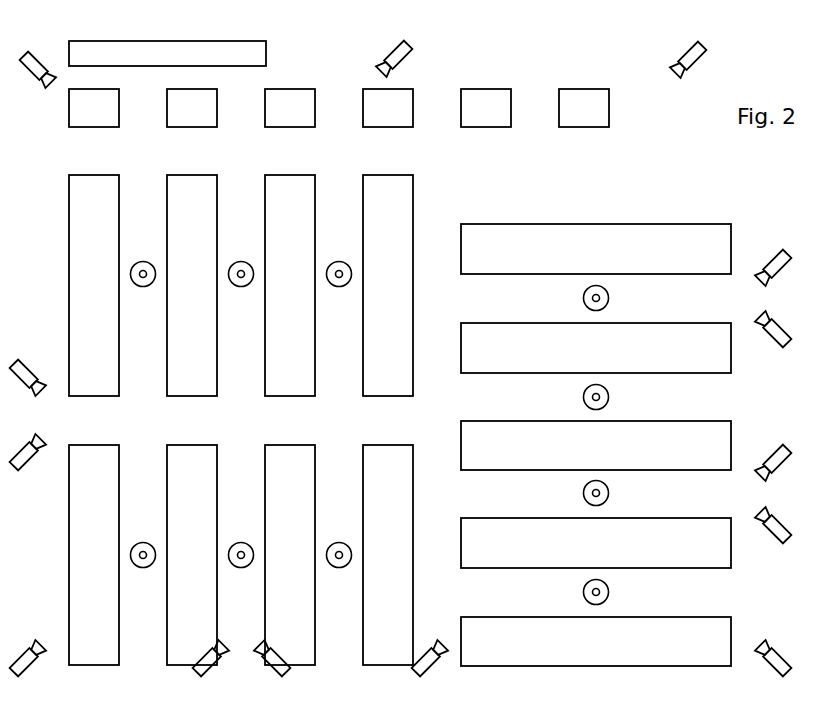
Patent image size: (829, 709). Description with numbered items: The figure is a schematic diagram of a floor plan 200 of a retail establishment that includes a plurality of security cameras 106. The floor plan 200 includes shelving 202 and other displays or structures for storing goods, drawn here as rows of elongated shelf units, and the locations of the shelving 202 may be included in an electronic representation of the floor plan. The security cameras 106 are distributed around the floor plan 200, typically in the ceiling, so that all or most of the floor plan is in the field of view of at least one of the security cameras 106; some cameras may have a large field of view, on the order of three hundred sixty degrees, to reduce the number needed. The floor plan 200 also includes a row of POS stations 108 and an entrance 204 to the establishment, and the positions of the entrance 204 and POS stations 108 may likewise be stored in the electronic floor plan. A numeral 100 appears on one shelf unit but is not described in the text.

The shelving unit / inventory location 100 is at (596, 445).
The security camera 106 is at (243, 262).
The POS station 108 is at (108, 118).
The floor plan 200 is at (659, 164).
The shelving 202 is at (413, 183).
The entrance 204 is at (216, 63).